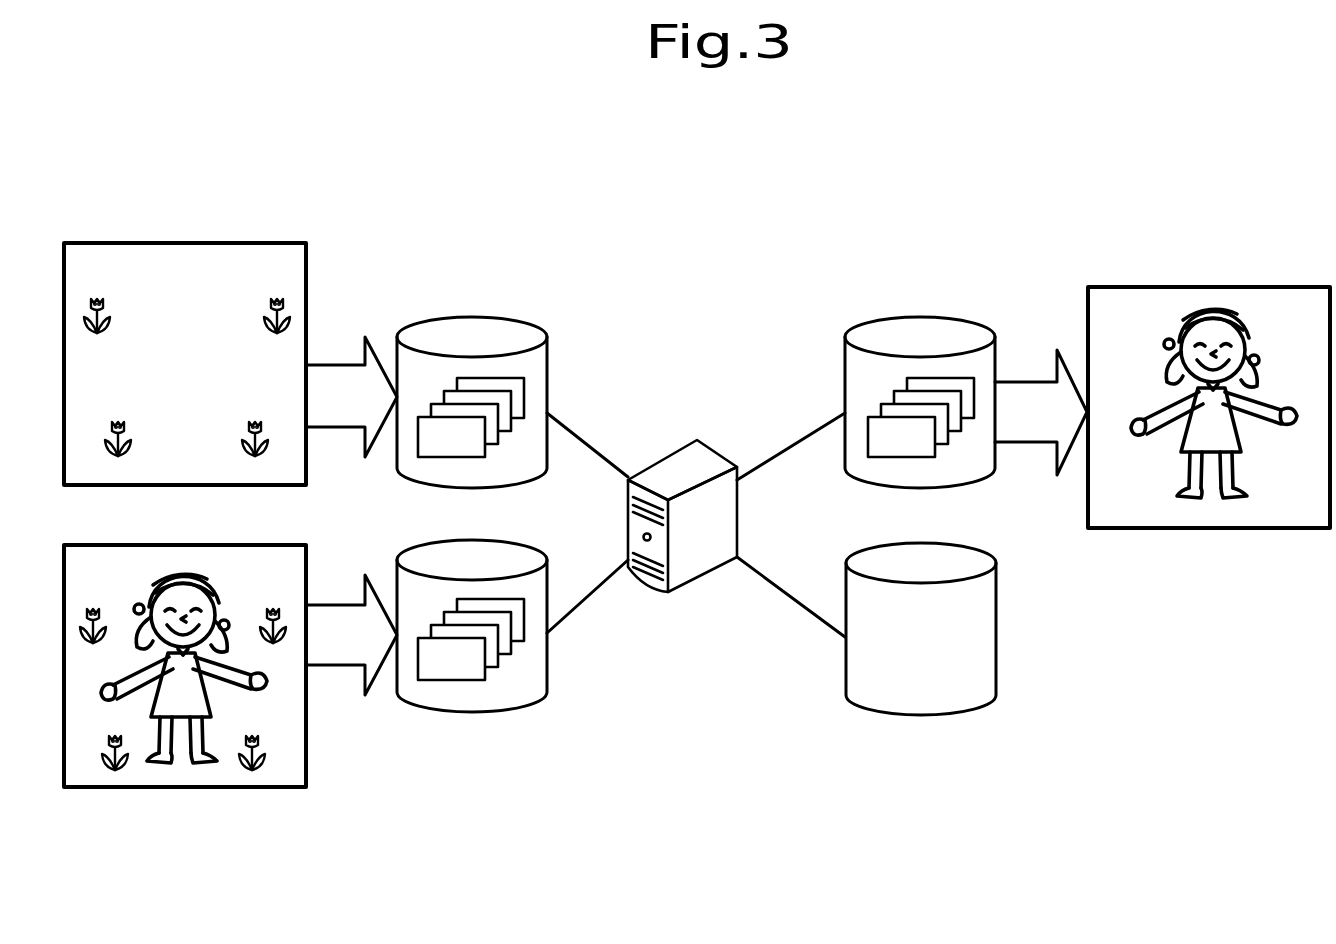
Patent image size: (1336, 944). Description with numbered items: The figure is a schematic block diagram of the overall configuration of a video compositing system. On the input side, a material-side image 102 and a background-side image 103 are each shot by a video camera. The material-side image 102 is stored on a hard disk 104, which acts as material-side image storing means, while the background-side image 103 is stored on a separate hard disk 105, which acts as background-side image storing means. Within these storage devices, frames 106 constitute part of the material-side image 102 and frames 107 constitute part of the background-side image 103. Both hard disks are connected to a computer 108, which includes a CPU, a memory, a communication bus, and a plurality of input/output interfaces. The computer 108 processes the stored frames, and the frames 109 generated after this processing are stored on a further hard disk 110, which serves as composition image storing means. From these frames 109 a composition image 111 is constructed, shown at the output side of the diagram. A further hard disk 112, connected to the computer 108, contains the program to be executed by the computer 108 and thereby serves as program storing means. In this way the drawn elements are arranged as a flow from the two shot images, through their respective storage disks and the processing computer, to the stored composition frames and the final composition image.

The material-side image 102 is at (187, 787).
The background-side image 103 is at (183, 243).
The hard disk for storing the material-side image 104 is at (496, 674).
The hard disk for storing the background-side image 105 is at (507, 363).
The frames of the material-side image 106 is at (513, 665).
The frames of the background-side image 107 is at (527, 363).
The computer 108 is at (713, 448).
The frames generated after processing 109 is at (978, 372).
The hard disk for storing the generated frames 110 is at (947, 359).
The composition image 111 is at (1213, 287).
The hard disk containing the program 112 is at (917, 715).